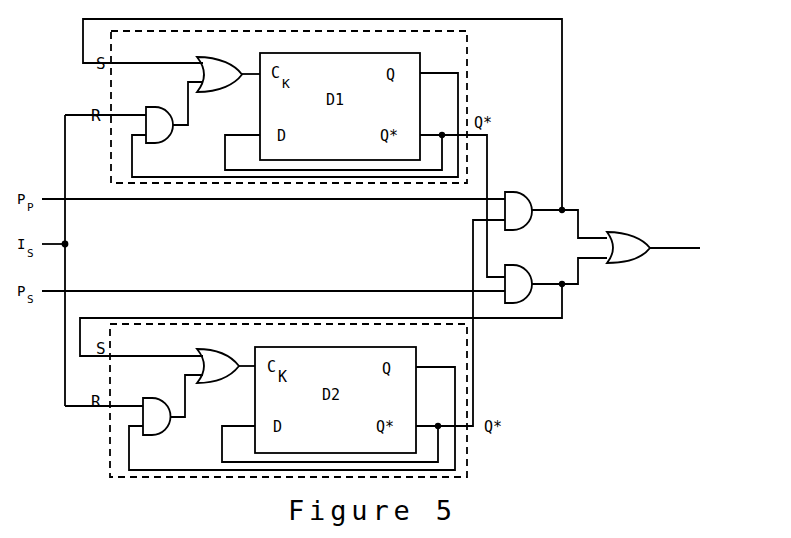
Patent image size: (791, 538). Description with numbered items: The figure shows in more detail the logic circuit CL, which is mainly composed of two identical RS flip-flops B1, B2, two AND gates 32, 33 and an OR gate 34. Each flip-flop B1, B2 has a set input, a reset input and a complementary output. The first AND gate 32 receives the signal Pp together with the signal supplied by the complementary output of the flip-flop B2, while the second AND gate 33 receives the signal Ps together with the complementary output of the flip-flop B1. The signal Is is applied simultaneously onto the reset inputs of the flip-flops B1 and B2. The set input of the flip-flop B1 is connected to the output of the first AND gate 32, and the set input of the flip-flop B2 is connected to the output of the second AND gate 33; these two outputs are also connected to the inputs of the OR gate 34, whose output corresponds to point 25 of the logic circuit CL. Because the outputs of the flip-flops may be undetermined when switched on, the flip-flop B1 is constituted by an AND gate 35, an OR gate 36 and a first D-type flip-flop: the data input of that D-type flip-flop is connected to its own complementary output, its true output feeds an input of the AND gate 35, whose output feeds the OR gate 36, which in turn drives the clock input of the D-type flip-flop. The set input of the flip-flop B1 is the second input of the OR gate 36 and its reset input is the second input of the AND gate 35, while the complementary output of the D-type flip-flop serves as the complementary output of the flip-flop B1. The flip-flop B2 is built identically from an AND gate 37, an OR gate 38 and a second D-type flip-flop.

The point of the logic circuit 25 is at (668, 248).
The first AND gate 32 is at (530, 192).
The second AND gate 33 is at (530, 265).
The OR gate 34 is at (637, 232).
The AND gate 35 is at (170, 107).
The OR gate 36 is at (228, 57).
The AND gate 37 is at (167, 398).
The OR gate 38 is at (226, 349).
The RS flip-flop B1 is at (473, 93).
The RS flip-flop B2 is at (472, 445).
The logic circuit CL is at (613, 142).